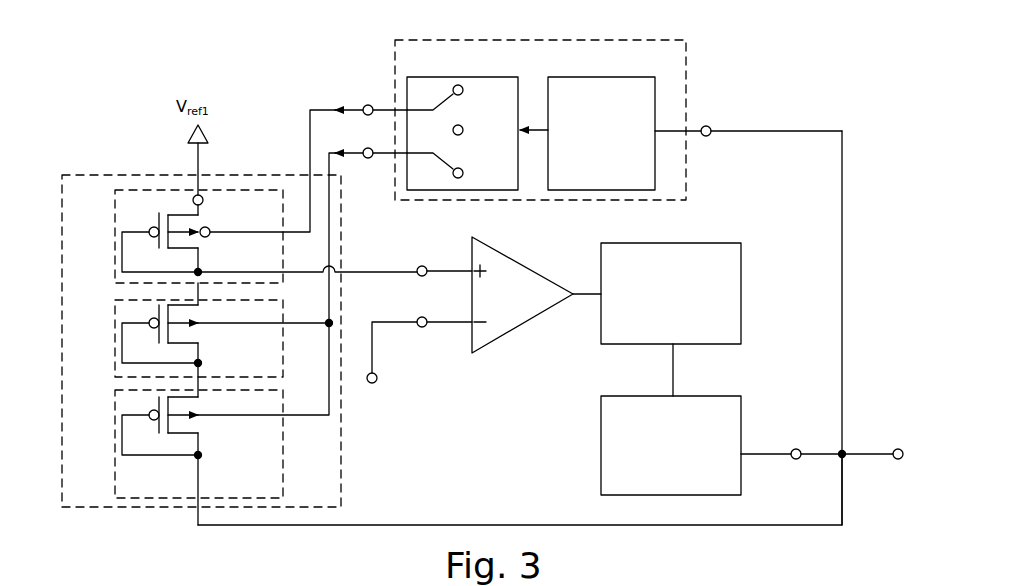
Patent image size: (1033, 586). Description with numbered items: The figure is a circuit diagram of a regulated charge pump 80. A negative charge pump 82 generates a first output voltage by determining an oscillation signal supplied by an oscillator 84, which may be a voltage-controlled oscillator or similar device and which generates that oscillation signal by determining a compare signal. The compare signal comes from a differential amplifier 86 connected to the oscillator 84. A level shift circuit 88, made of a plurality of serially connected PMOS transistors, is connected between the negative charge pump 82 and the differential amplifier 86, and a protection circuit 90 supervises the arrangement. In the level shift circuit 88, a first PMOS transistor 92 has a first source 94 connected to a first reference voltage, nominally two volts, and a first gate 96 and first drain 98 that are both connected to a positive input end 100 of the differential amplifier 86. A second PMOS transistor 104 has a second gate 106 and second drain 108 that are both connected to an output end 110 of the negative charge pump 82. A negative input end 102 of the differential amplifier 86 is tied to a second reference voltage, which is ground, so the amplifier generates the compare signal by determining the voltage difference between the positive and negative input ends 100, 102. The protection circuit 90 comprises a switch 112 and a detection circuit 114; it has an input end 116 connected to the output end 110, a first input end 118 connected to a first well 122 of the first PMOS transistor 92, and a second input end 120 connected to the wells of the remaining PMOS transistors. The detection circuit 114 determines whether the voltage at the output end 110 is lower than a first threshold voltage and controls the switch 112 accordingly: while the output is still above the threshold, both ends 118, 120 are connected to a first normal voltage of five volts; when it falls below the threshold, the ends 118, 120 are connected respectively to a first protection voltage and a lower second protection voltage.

The regulated charge pump 80 is at (124, 82).
The negative charge pump 82 is at (707, 396).
The oscillator 84 is at (708, 243).
The differential amplifier 86 is at (512, 259).
The level shift circuit 88 is at (136, 175).
The protection circuit 90 is at (686, 92).
The first PMOS transistor 92 is at (115, 230).
The first source 94 is at (204, 199).
The first gate 96 is at (150, 229).
The first drain 98 is at (204, 271).
The positive input end 100 is at (422, 266).
The negative input end 102 is at (422, 327).
The second PMOS transistor 104 is at (115, 425).
The second gate 106 is at (151, 419).
The second drain 108 is at (204, 455).
The output end 110 is at (796, 448).
The switch 112 is at (480, 77).
The detection circuit 114 is at (618, 77).
The input end 116 is at (706, 137).
The first input end 118 is at (368, 105).
The second input end 120 is at (368, 158).
The first well 122 is at (270, 173).